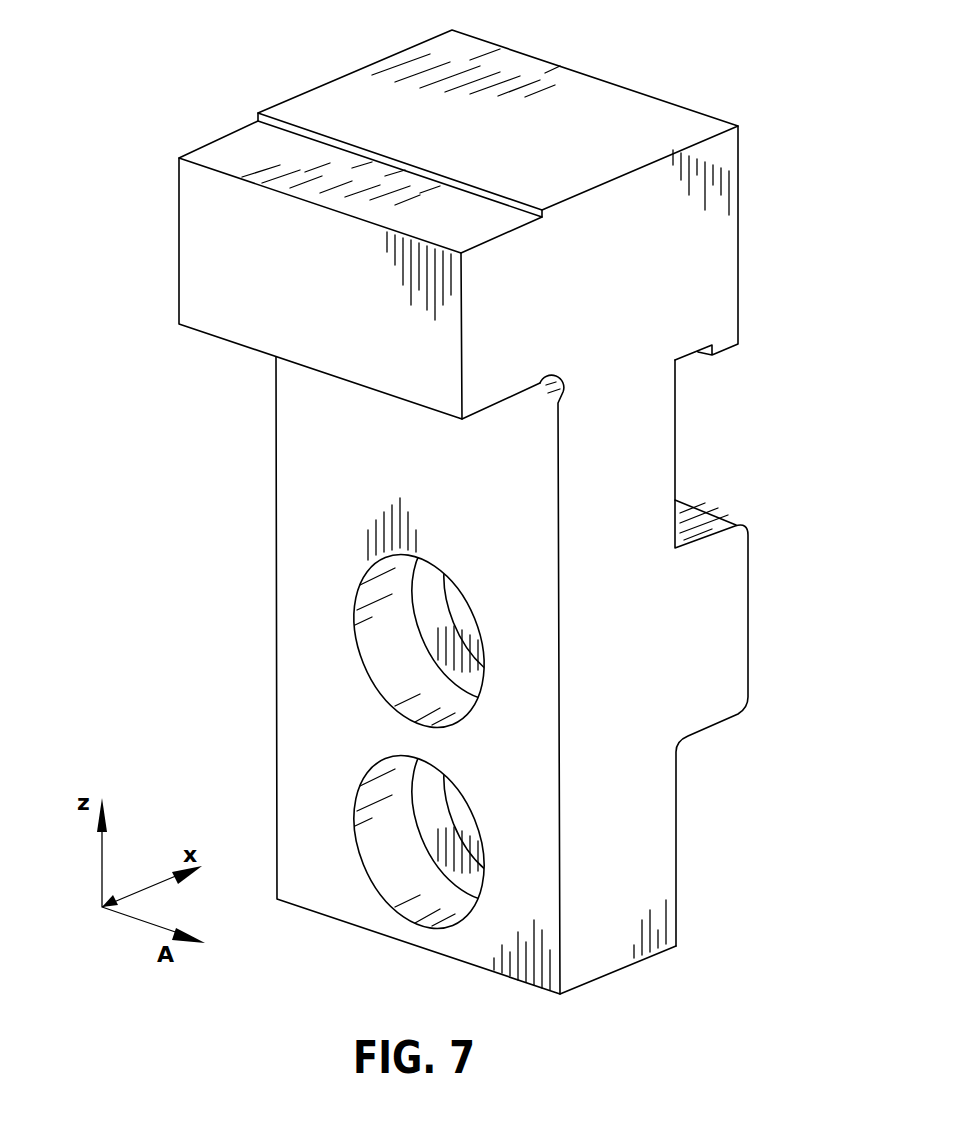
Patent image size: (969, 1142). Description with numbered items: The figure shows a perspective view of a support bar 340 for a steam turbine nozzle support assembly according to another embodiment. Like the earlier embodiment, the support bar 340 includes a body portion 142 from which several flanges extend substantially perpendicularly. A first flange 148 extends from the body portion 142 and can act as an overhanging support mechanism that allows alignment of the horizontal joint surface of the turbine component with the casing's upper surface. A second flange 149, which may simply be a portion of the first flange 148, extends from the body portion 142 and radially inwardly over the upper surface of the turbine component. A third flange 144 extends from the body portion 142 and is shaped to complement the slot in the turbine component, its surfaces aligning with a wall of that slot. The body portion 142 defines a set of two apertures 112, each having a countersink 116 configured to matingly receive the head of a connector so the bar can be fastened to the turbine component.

The support bar 340 is at (122, 103).
The first flange 148 is at (195, 238).
The second flange 149 is at (740, 263).
The body portion 142 is at (462, 499).
The third flange 144 is at (720, 618).
The apertures 112 is at (450, 803).
The countersinks 116 is at (427, 698).